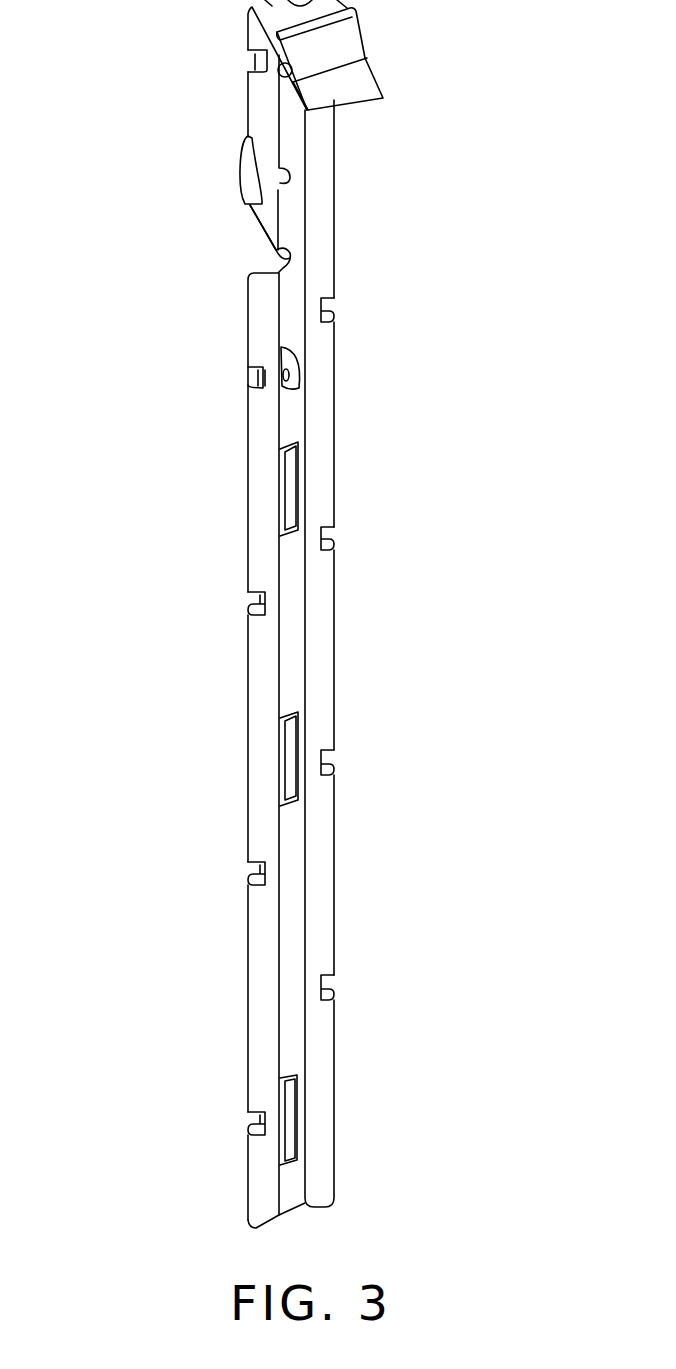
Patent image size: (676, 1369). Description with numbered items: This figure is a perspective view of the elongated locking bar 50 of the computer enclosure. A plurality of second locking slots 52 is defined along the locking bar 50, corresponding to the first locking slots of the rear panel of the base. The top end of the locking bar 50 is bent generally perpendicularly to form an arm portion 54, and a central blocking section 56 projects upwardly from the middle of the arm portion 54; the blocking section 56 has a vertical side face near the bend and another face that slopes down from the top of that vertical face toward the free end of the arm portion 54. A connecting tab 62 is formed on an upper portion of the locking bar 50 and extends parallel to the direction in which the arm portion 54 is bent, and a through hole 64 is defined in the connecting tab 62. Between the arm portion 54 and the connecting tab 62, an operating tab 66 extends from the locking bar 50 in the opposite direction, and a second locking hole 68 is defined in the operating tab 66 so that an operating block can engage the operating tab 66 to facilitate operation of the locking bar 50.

The locking bar 50 is at (355, 467).
The second locking slots 52 is at (288, 1117).
The arm portion 54 is at (357, 82).
The blocking section 56 is at (355, 43).
The connecting tab 62 is at (283, 385).
The through hole 64 is at (282, 377).
The operating tab 66 is at (252, 208).
The second locking hole 68 is at (245, 200).